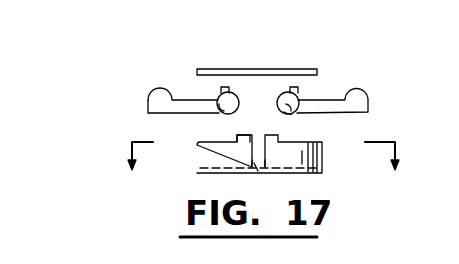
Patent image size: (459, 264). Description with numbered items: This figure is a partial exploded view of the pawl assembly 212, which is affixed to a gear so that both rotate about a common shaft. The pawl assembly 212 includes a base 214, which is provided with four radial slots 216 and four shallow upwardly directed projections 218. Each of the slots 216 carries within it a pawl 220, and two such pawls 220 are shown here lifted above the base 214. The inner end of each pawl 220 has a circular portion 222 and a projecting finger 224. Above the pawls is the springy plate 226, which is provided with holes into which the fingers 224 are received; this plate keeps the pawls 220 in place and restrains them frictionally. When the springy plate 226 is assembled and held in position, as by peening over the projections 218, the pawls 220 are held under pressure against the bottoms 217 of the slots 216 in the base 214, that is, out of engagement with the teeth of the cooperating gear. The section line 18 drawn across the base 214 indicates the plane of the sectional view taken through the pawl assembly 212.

The pawl assembly 212 is at (286, 56).
The base 214 is at (196, 148).
The radial slot 216 is at (252, 154).
The bottom of groove 217 is at (258, 172).
The upwardly directed projection 218 is at (236, 135).
The pawl 220 is at (150, 101).
The circular portion 222 is at (291, 117).
The projecting finger 224 is at (220, 88).
The springy plate 226 is at (223, 69).
The section line 18- 18 is at (267, 157).